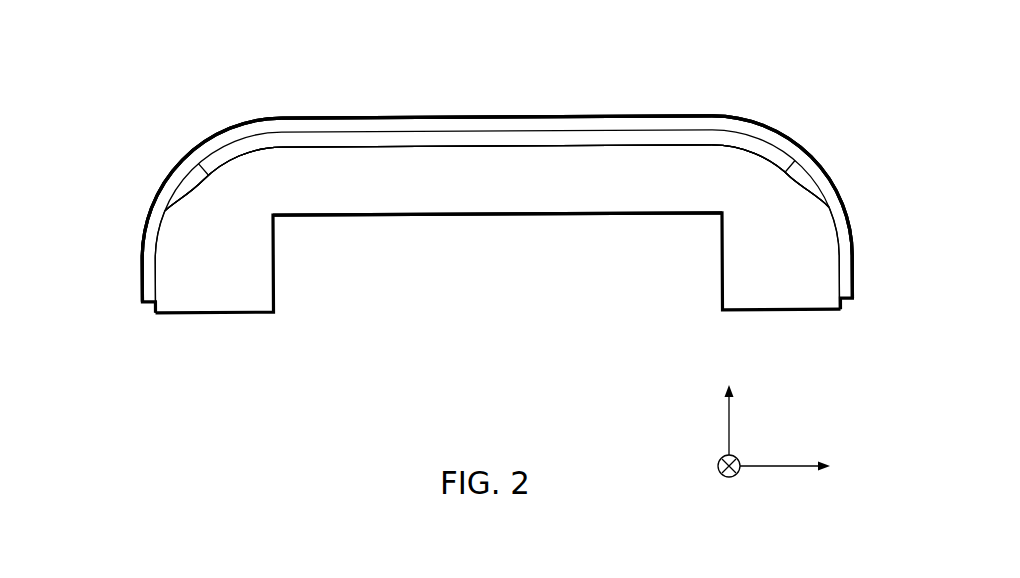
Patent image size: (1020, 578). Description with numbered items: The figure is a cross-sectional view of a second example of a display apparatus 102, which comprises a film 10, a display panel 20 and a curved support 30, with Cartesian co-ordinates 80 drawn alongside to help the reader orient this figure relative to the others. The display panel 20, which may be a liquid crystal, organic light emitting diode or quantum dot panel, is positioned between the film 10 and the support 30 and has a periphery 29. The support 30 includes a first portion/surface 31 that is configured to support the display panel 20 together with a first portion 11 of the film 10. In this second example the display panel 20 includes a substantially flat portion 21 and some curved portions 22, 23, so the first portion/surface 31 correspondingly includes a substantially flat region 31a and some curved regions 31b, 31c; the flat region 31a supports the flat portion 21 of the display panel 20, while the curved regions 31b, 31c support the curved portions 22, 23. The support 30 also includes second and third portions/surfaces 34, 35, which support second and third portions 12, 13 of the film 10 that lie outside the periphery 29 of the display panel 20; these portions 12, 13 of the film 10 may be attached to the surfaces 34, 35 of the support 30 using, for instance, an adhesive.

The film 10 is at (653, 116).
The first portion of the film 11 is at (408, 117).
The second portion of the film 12 is at (158, 193).
The third portion of the film 13 is at (843, 208).
The display panel 20 is at (585, 130).
The substantially flat portion of the display panel 21 is at (486, 136).
The curved portion of the display panel 22 is at (258, 140).
The curved portion of the display panel 23 is at (752, 140).
The periphery of the display panel 29 is at (204, 167).
The curved support 30 is at (602, 266).
The first portion/surface of the support 31 is at (482, 190).
The substantially flat region of the first portion/surface 31a is at (420, 147).
The curved region of the first portion/surface 31b is at (240, 158).
The curved region of the first portion/surface 31c is at (742, 153).
The second portion/surface of the support 34 is at (165, 237).
The third portion/surface of the support 35 is at (823, 220).
The Cartesian co-ordinates 80 is at (740, 498).
The second example of the display apparatus 102 is at (316, 352).